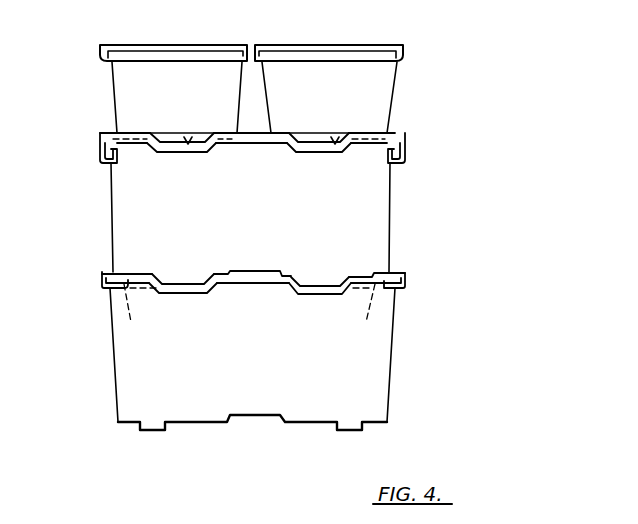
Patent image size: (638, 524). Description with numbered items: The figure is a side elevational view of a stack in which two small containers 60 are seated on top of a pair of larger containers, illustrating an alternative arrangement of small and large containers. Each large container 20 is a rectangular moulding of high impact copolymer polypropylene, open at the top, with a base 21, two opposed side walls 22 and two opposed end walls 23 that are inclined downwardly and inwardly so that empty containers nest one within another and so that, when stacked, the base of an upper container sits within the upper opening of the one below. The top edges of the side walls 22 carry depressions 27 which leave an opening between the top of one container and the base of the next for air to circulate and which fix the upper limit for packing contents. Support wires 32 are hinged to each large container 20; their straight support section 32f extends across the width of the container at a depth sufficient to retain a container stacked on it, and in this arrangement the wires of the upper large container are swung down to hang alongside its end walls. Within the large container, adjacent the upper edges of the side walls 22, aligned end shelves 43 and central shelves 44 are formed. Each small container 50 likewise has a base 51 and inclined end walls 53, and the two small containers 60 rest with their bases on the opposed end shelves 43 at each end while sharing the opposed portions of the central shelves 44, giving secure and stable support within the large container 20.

The rectangular container 20 is at (258, 303).
The base 21 is at (182, 294).
The side walls 22 is at (266, 224).
The end walls 23 is at (110, 193).
The depressions 27 is at (184, 153).
The support wires 32 is at (100, 163).
The straight support section 32f is at (246, 320).
The end shelves 43 is at (140, 146).
The central shelves 44 is at (257, 146).
The rectangular container 50 is at (256, 76).
The base 51 is at (189, 137).
The end walls 53 is at (168, 72).
The small containers 60 is at (135, 58).